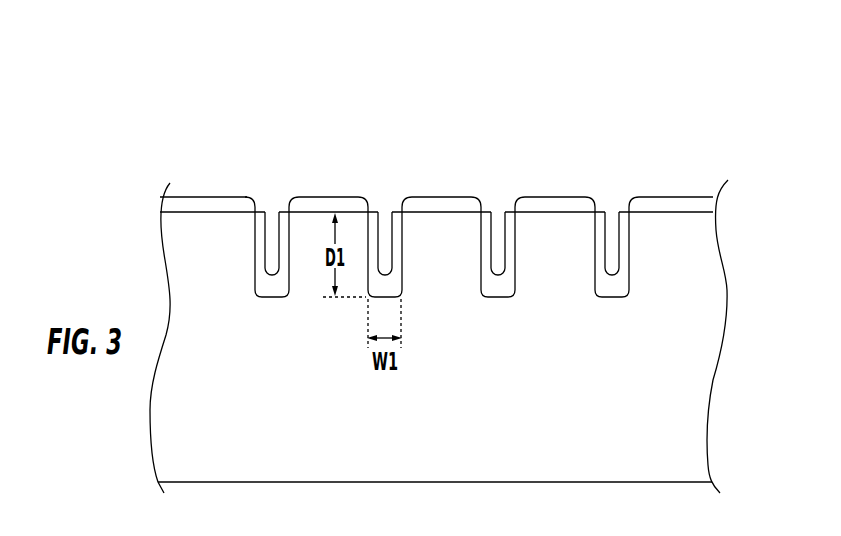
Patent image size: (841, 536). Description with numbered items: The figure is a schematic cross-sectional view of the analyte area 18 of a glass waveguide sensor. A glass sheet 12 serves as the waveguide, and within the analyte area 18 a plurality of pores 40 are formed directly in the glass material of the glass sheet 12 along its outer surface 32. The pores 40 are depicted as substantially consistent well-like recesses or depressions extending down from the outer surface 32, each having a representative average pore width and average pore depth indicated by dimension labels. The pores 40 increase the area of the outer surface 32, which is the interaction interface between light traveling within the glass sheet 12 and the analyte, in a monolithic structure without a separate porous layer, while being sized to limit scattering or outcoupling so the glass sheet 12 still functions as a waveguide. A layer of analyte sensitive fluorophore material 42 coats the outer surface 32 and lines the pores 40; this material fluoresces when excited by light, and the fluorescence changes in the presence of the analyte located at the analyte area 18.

The glass sheet 12 is at (695, 363).
The analyte area 18 is at (622, 78).
The outer surface 32 is at (208, 195).
The pores 40 is at (274, 170).
The analyte sensitive fluorophore material 42 is at (321, 197).